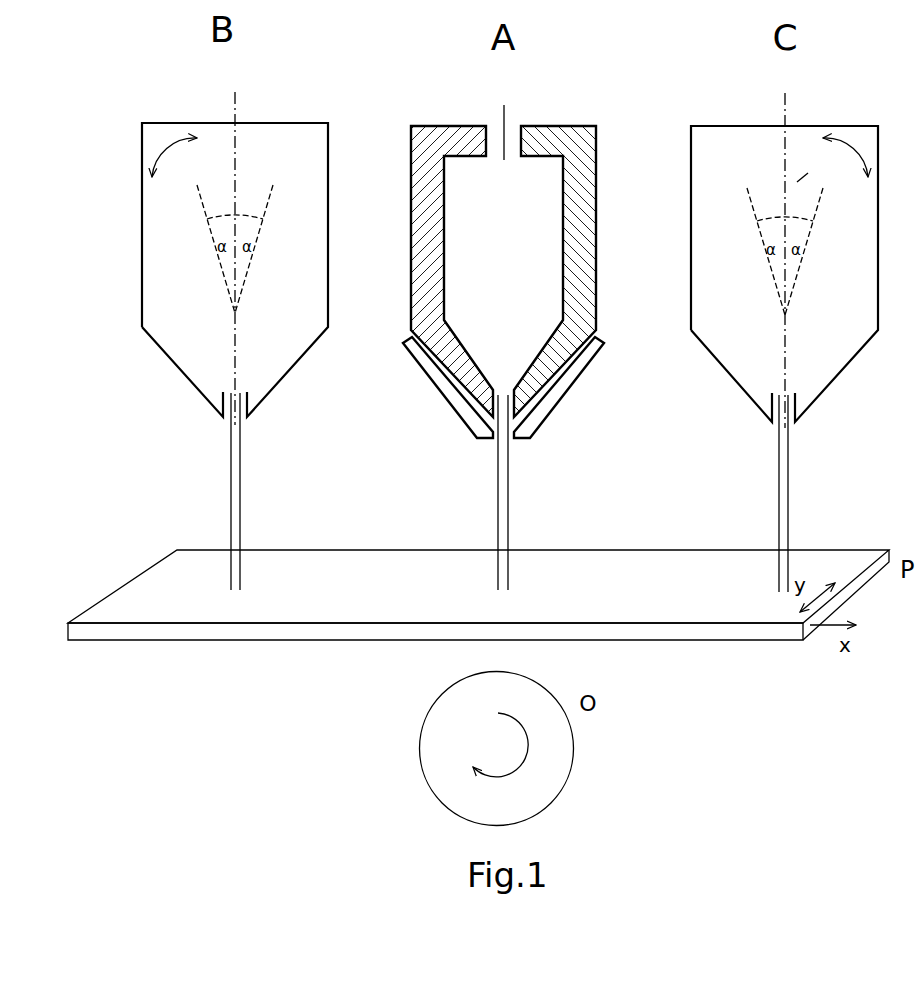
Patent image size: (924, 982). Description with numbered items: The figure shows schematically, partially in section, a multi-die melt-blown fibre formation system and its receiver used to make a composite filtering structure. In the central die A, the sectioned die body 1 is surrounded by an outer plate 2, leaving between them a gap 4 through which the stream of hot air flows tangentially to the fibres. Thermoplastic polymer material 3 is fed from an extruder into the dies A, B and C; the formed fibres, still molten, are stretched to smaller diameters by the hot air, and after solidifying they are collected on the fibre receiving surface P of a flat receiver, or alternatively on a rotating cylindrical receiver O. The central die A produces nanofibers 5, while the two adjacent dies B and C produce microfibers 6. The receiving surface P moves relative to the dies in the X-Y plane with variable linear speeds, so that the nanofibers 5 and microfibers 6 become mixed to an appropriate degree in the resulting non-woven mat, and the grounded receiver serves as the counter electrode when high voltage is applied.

The nozzle body 1 is at (523, 270).
The outer plate / shield 2 is at (521, 387).
The thermoplastic polymer material 3 is at (515, 122).
The gap between nozzle and plate 4 is at (409, 331).
The nanofibers 5 is at (541, 492).
The microfibers 6 is at (539, 492).